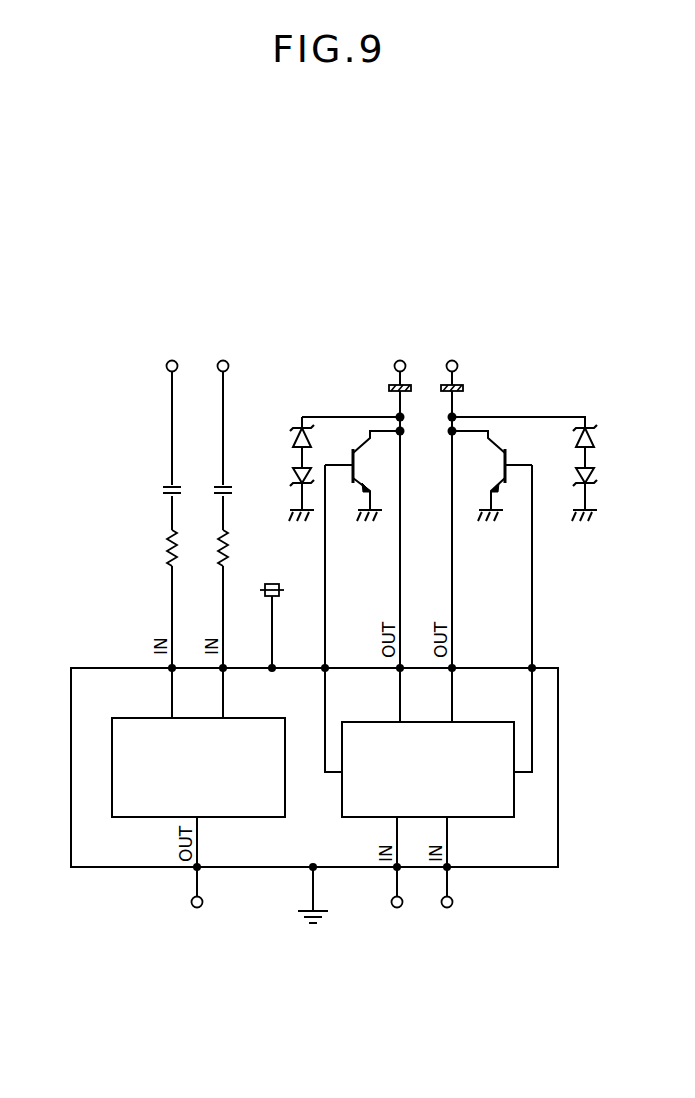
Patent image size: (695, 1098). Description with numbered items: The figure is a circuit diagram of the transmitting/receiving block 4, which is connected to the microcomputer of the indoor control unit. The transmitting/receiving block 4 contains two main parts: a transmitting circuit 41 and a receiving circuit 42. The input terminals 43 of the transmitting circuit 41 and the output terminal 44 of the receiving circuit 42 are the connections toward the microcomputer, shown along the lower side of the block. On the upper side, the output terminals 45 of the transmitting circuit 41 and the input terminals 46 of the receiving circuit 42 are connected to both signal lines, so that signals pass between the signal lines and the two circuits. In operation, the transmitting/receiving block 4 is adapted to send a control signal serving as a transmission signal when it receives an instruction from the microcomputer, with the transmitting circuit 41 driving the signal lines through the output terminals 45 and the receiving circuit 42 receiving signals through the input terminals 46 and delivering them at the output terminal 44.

The transmitting/receiving block 4 is at (192, 258).
The transmitting circuit 41 is at (506, 817).
The receiving circuit 42 is at (128, 718).
The input terminals 43 is at (396, 908).
The output terminal 44 is at (196, 908).
The output terminals 45 is at (400, 357).
The input terminals 46 is at (172, 357).